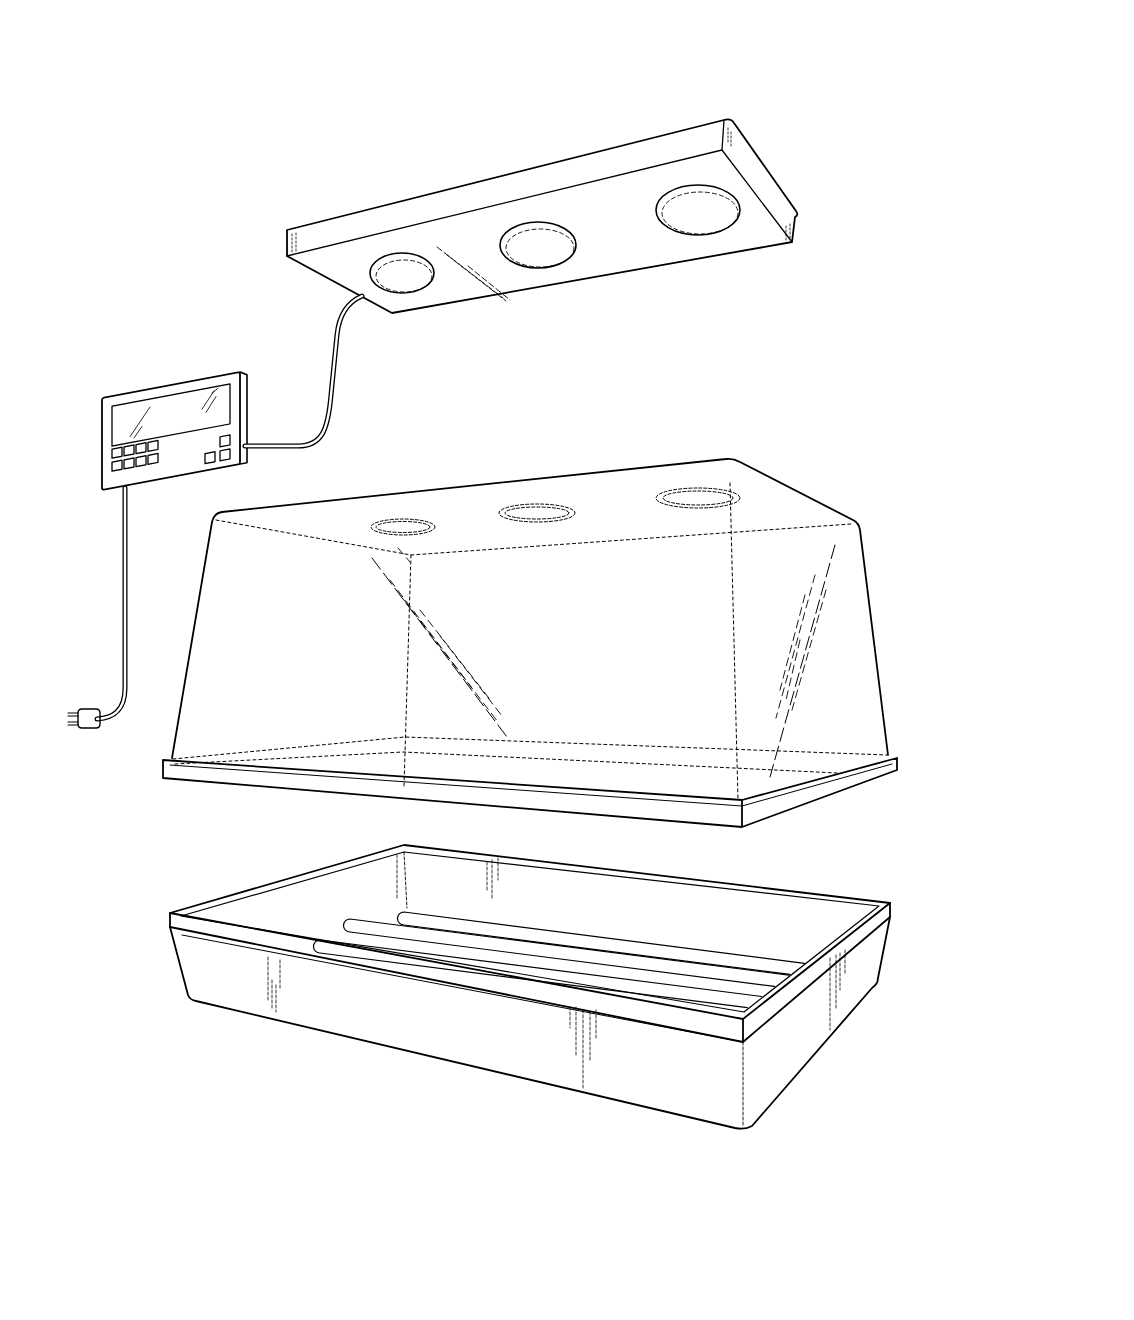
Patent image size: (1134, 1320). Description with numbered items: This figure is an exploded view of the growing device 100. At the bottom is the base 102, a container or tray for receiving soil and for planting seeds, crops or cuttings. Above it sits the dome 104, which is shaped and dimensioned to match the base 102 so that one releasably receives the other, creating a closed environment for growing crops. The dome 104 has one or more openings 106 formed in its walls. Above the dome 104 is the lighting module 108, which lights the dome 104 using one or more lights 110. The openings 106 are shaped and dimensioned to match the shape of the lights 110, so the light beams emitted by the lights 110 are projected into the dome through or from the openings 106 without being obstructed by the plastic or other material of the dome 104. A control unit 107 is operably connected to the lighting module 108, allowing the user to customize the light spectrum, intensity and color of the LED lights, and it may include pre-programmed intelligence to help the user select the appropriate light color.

The growing device 100 is at (719, 65).
The base 102 is at (864, 997).
The dome 104 is at (862, 531).
The openings 106 is at (404, 481).
The control unit 107 is at (198, 382).
The lighting module 108 is at (797, 210).
The lights 110 is at (446, 299).